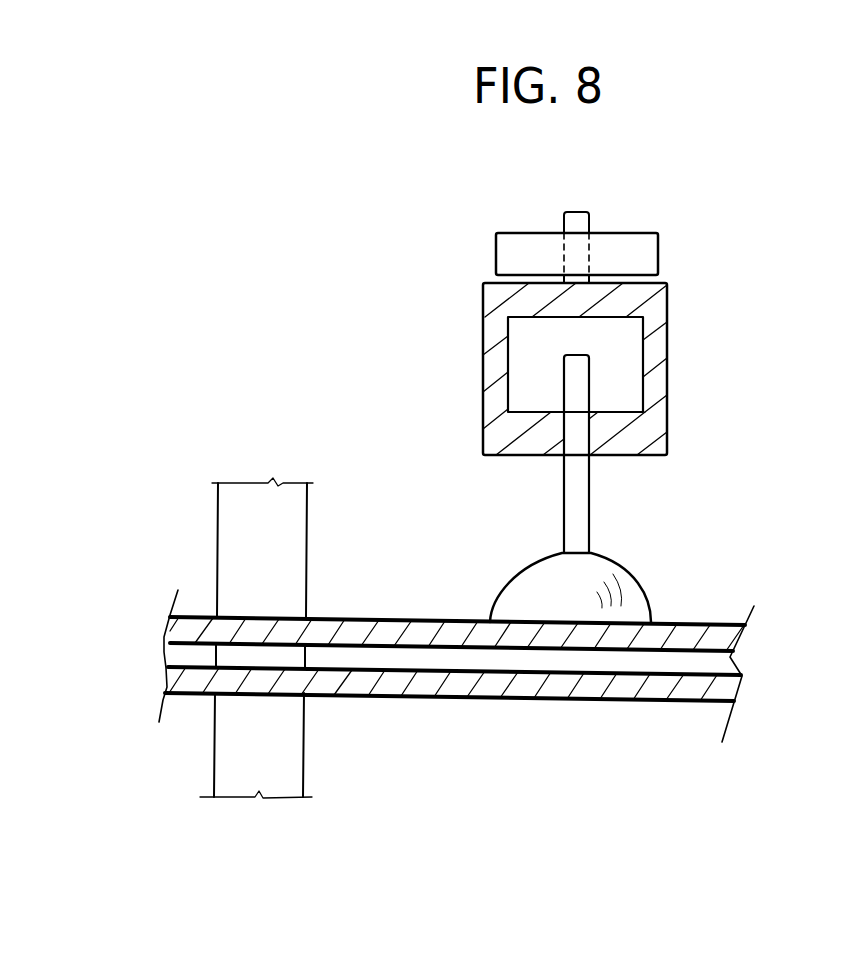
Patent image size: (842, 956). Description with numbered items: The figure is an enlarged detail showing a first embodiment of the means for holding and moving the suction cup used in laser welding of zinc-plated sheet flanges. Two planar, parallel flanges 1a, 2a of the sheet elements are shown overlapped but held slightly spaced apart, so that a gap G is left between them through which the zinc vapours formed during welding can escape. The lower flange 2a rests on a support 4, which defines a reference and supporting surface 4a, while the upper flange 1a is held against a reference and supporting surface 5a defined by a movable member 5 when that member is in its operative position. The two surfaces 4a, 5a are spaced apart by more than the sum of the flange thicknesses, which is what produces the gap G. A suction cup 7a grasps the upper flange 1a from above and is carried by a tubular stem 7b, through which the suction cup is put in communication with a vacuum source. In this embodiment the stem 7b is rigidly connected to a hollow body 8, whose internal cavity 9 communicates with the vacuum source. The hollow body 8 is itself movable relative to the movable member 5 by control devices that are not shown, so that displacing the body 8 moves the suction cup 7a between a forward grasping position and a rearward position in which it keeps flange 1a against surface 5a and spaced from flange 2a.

The flange 1a is at (695, 640).
The flange 2a is at (705, 693).
The gap G is at (517, 660).
The support 4 is at (320, 770).
The reference and supporting surface 4a is at (262, 682).
The movable member 5 is at (661, 250).
The reference and supporting surface 5a is at (262, 631).
The suction cup 7a is at (639, 585).
The tubular stem 7b is at (588, 502).
The hollow body 8 is at (680, 427).
The cavity 9 is at (617, 355).